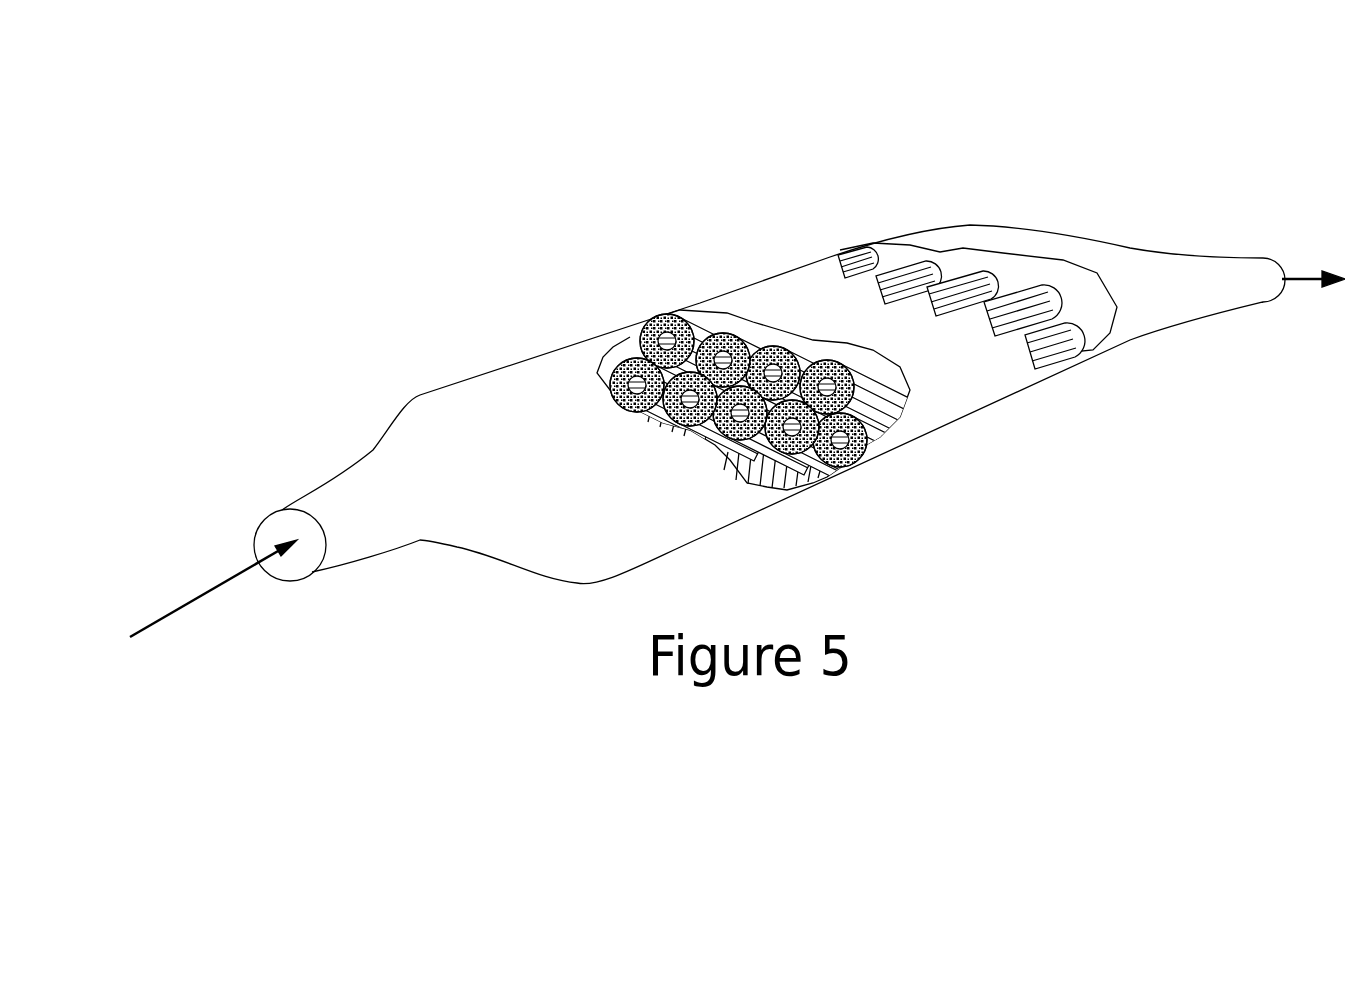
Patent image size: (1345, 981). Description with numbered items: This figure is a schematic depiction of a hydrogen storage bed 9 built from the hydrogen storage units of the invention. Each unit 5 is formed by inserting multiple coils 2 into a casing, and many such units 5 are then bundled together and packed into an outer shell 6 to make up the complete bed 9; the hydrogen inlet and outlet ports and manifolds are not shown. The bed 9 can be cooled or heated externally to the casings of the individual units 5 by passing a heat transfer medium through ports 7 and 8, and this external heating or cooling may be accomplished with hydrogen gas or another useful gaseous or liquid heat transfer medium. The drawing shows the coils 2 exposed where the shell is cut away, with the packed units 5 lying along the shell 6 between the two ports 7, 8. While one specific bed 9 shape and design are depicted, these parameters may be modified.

The coils 2 is at (656, 318).
The unit 5 is at (1025, 295).
The outer shell 6 is at (817, 293).
The port 7 is at (228, 573).
The port 8 is at (1313, 253).
The bed 9 is at (502, 348).